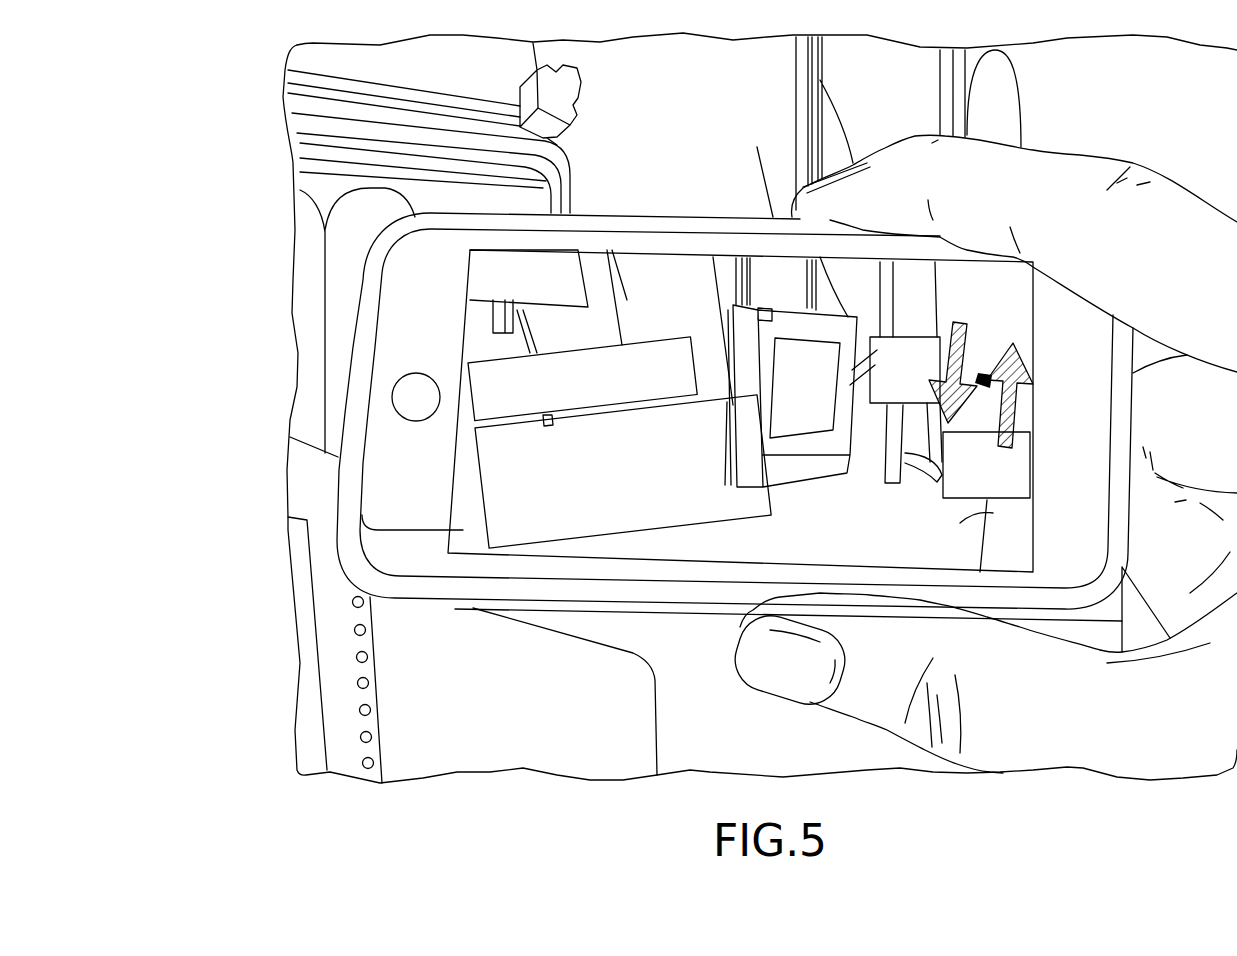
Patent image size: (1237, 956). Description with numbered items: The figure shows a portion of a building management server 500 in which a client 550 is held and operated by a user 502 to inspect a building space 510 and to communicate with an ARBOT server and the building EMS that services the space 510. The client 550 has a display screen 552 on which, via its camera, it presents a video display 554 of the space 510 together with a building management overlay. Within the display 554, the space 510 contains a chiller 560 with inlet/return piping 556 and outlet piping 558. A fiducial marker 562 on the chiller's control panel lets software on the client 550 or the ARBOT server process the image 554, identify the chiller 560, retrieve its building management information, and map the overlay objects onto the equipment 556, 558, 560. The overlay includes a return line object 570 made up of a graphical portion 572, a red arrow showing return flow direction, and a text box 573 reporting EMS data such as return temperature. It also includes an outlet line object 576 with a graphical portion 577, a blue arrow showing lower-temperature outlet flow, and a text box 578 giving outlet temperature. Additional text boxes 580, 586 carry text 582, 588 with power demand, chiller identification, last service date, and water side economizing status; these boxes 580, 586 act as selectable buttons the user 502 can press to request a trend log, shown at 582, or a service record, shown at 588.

The building management server 500 is at (222, 80).
The user 502 is at (1169, 737).
The building space 510 is at (1035, 47).
The client 550 is at (322, 500).
The display screen 552 is at (367, 542).
The video display 554 is at (1009, 360).
The inlet/return piping 556 is at (937, 298).
The outlet piping 558 is at (993, 515).
The chiller 560 is at (819, 551).
The fiducial marker 562 is at (768, 312).
The return line object 570 is at (948, 312).
The graphical portion 572 is at (963, 328).
The text box 573 is at (887, 337).
The outlet line object 576 is at (982, 375).
The graphical portion 577 is at (1010, 405).
The text box 578 is at (943, 488).
The text box 580 is at (600, 353).
The text 582 is at (665, 383).
The text box 586 is at (623, 527).
The text 588 is at (641, 527).